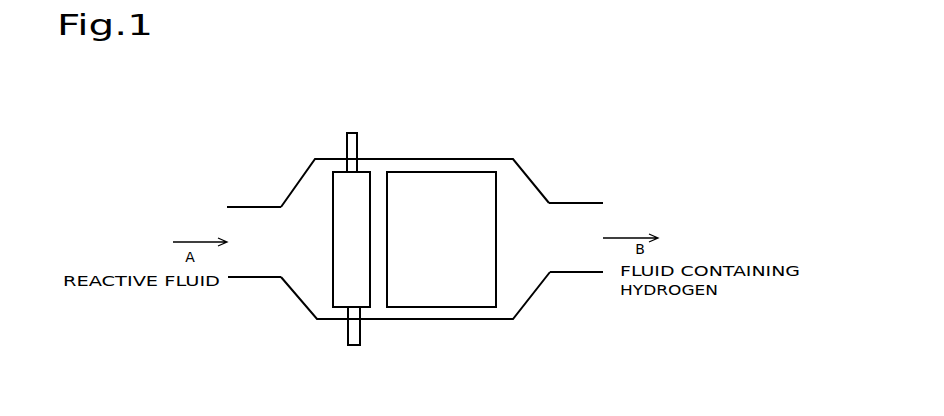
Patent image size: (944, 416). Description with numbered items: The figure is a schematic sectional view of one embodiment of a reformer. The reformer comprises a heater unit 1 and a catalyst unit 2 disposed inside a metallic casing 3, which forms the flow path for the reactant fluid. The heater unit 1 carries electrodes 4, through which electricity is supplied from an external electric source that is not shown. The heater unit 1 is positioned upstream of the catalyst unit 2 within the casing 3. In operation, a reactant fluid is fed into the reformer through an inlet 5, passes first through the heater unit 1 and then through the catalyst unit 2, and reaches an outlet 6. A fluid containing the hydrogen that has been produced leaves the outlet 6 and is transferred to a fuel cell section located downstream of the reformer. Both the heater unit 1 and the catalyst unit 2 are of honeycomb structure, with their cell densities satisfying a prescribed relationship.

The heater unit 1 is at (362, 172).
The catalyst unit 2 is at (452, 172).
The metallic casing 3 is at (302, 173).
The electrodes 4 is at (353, 132).
The inlet 5 is at (255, 220).
The outlet 6 is at (575, 213).